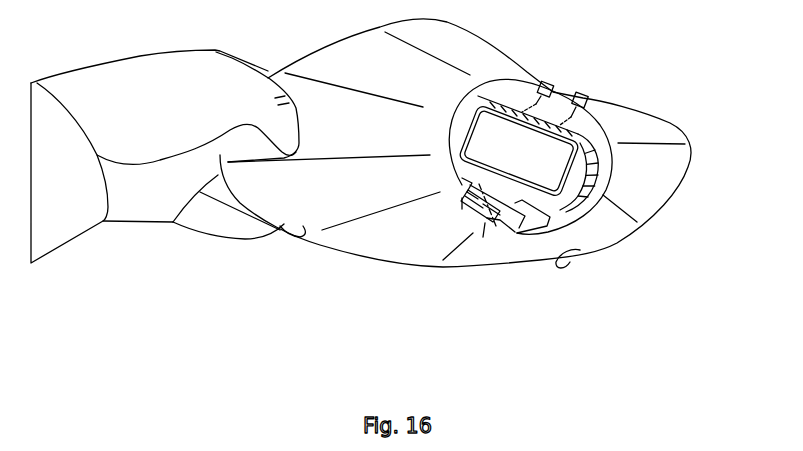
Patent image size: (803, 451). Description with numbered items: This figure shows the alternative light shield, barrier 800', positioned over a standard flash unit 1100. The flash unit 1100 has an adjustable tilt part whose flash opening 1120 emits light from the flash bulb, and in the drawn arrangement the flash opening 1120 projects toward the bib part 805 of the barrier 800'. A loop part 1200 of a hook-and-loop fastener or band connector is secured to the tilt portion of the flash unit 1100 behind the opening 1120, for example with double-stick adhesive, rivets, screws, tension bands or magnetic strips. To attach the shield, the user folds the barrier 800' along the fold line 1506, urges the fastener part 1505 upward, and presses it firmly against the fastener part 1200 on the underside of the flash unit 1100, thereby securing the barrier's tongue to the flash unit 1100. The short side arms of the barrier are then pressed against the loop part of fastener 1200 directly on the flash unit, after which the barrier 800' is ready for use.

The barrier 800' is at (487, 195).
The bib part 805 is at (367, 257).
The flash unit 1100 is at (611, 166).
The opening 1120 is at (572, 194).
The loop part 1200 is at (473, 172).
The fastener part 1505 is at (500, 223).
The fold line 1506 is at (492, 223).